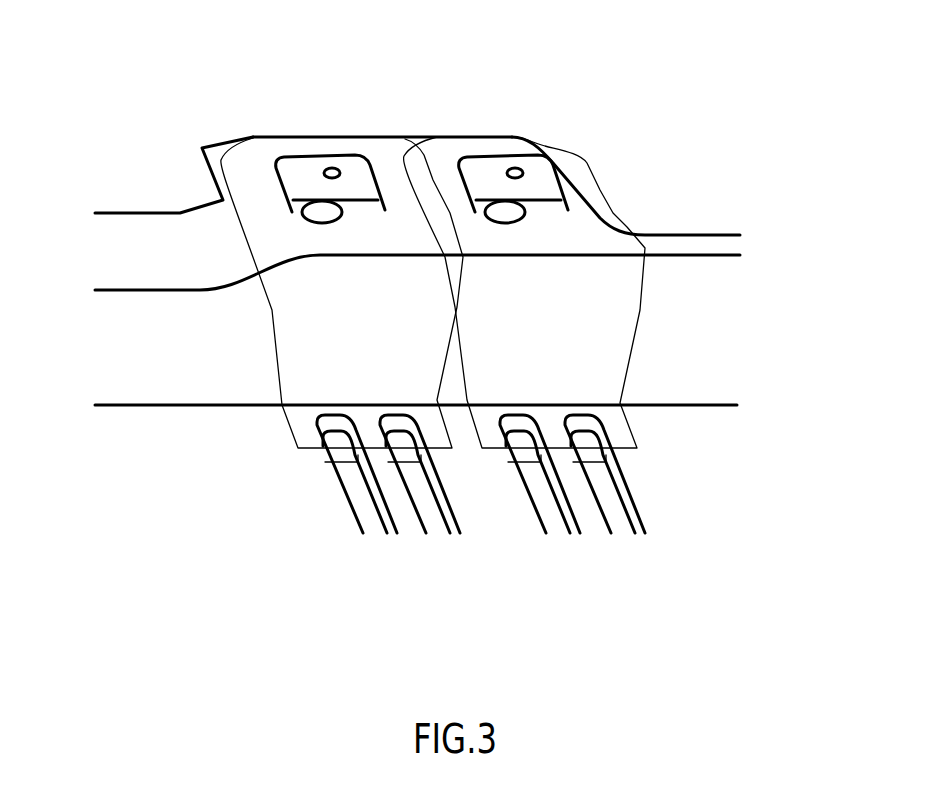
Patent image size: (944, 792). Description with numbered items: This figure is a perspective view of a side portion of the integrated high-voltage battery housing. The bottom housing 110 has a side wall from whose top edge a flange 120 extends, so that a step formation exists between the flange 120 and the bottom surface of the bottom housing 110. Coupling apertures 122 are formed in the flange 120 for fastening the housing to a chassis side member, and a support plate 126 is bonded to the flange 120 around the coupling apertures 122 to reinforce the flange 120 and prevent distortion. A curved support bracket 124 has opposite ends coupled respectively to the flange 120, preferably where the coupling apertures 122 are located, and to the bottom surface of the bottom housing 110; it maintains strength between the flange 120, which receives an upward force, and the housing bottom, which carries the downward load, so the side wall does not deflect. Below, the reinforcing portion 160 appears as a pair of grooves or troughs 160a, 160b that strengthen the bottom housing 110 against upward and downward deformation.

The bottom housing 110 is at (720, 430).
The flange 120 is at (143, 228).
The coupling apertures 122 is at (513, 210).
The support bracket 124 is at (593, 188).
The support plate 126 is at (497, 168).
The reinforcing portion 160 is at (481, 547).
The reinforcing portion 160a is at (372, 522).
The reinforcing portion 160b is at (433, 522).